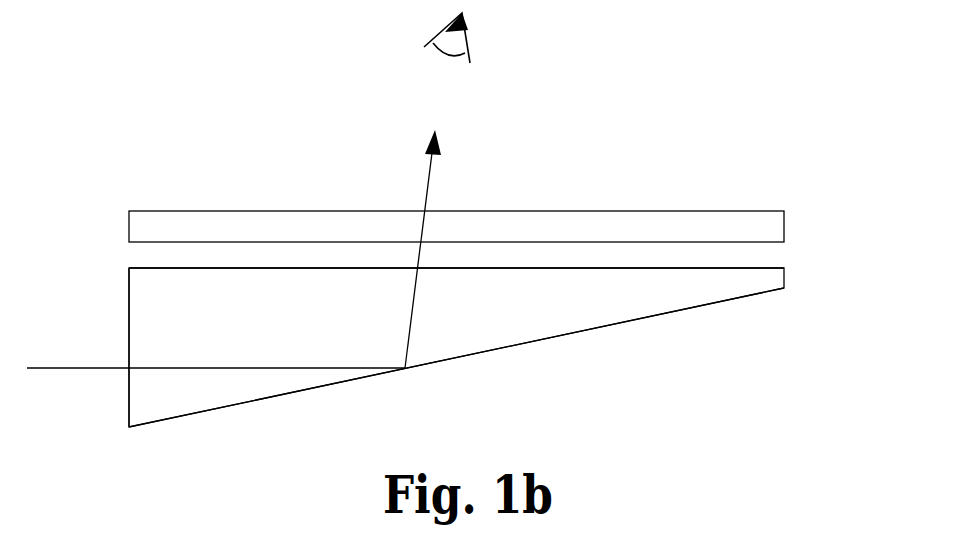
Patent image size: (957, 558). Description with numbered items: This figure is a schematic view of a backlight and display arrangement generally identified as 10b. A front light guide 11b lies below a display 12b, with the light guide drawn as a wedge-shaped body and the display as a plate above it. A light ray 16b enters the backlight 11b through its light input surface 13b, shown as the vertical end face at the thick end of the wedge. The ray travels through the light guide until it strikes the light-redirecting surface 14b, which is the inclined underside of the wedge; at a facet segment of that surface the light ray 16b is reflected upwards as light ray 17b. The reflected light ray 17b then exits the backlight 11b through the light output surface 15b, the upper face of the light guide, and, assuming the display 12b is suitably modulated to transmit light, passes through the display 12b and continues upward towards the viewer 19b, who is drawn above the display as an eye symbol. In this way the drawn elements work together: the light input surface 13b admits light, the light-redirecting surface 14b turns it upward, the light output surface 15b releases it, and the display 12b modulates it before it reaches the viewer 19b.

The backlight and display 10b is at (464, 312).
The light guide 11b is at (700, 283).
The display 12b is at (738, 212).
The light input surface 13b is at (127, 394).
The light-redirecting surface 14b is at (452, 358).
The light output surface 15b is at (745, 268).
The light ray 16b is at (78, 365).
The light ray 17b is at (429, 189).
The viewer 19b is at (470, 41).